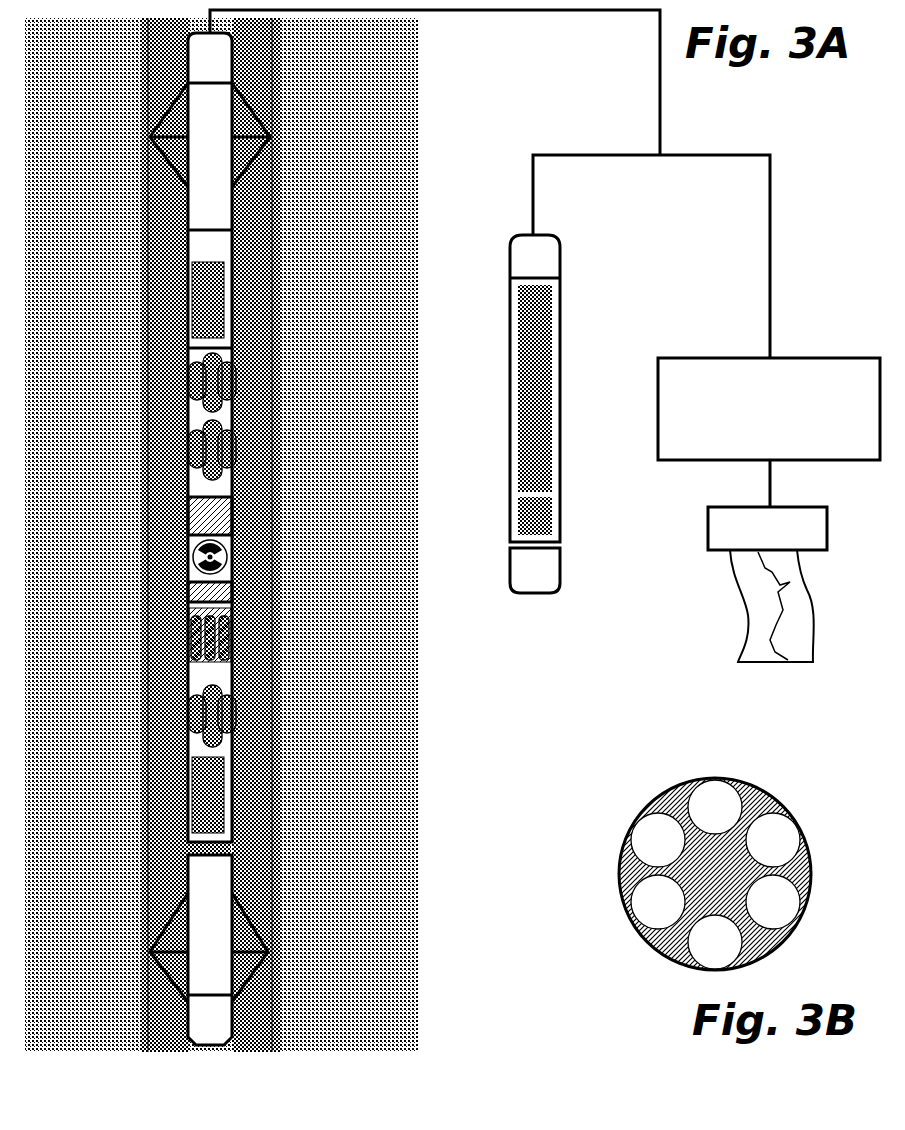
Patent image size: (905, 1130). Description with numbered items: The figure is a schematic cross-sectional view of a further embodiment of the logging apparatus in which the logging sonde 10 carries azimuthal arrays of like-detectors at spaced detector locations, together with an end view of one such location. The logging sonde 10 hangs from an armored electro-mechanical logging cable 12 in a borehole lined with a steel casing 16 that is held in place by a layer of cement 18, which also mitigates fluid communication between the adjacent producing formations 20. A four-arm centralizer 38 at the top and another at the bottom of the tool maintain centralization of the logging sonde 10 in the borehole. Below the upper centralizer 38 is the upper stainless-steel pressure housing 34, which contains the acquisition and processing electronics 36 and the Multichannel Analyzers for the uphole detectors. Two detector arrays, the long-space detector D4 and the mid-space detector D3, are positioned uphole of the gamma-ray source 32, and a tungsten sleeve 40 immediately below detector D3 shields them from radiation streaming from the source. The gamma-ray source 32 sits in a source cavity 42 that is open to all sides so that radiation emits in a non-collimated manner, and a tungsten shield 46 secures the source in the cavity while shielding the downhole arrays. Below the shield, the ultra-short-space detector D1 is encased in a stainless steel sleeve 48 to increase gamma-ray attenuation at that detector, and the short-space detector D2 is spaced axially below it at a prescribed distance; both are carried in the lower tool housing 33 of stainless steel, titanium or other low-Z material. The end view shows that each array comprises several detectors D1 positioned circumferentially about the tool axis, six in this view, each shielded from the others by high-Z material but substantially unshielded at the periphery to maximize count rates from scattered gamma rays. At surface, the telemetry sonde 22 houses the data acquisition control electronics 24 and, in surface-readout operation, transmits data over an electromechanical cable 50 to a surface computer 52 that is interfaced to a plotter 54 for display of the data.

In FIG. 3A, the logging sonde 10 is at (237, 357).
In FIG. 3A, the armored electro-mechanical logging cable 12 is at (512, 16).
In FIG. 3A, the steel casing 16 is at (275, 935).
In FIG. 3A, the layer of cement 18 is at (288, 900).
In FIG. 3A, the producing formations 20 is at (328, 855).
In FIG. 3A, the telemetry sonde 22 is at (562, 338).
In FIG. 3A, the data acquisition control electronics 24 is at (553, 382).
In FIG. 3A, the gamma-ray source 32 is at (230, 557).
In FIG. 3A, the lower tool housing 33 is at (237, 762).
In FIG. 3A, the upper stainless-steel pressure housing 34 is at (237, 290).
In FIG. 3A, the acquisition and processing electronics 36 is at (210, 786).
In FIG. 3A, the centralizer 38 is at (220, 172).
In FIG. 3A, the tungsten sleeve 40 is at (216, 507).
In FIG. 3A, the source cavity 42 is at (232, 538).
In FIG. 3A, the tungsten shield 46 is at (216, 592).
In FIG. 3A, the stainless steel sleeve 48 is at (237, 620).
In FIG. 3B, the stainless steel sleeve 48 is at (778, 793).
In FIG. 3A, the electromechanical cable 50 is at (773, 275).
In FIG. 3A, the surface computer 52 is at (718, 390).
In FIG. 3A, the plotter 54 is at (748, 542).
In FIG. 3A, the ultra-short-space gamma-ray detector D1 is at (237, 635).
In FIG. 3B, the ultra-short-space gamma-ray detector D1 is at (715, 874).
In FIG. 3A, the short-space gamma-ray detector D2 is at (237, 725).
In FIG. 3A, the mid-space gamma-ray detector D3 is at (237, 448).
In FIG. 3A, the long-space gamma-ray detector D4 is at (237, 385).